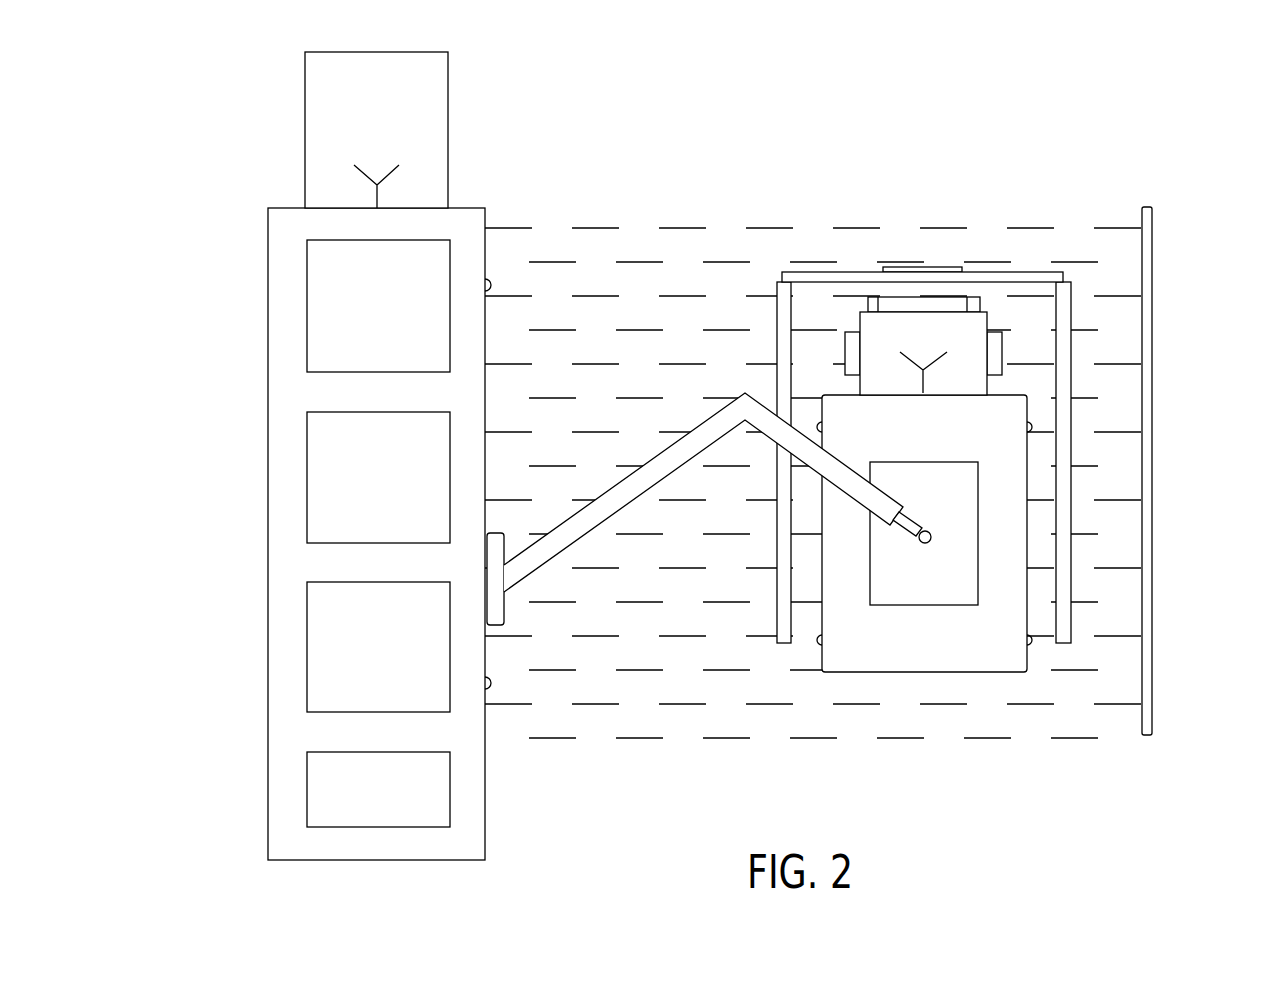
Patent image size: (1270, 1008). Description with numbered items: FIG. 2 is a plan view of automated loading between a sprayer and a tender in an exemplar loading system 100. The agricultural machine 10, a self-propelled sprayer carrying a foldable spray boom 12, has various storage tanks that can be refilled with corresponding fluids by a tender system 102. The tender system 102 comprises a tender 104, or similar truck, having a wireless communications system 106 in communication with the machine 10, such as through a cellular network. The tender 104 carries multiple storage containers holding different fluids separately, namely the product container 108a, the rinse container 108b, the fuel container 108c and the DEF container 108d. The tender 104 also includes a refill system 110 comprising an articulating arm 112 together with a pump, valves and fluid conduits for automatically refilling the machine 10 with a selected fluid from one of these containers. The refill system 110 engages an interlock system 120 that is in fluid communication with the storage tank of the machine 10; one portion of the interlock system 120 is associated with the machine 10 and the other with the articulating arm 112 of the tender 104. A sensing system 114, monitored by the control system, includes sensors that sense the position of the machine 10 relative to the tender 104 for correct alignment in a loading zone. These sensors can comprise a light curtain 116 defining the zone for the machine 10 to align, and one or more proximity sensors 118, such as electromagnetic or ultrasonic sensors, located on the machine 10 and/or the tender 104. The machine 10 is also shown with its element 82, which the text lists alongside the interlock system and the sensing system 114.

The loading system 100 is at (1122, 126).
The tender system 102 is at (262, 65).
The tender 104 is at (425, 88).
The wireless communications system 106 is at (345, 165).
The product container 108a is at (328, 305).
The rinse container 108b is at (328, 478).
The fuel container 108c is at (328, 650).
The DEF container 108d is at (328, 790).
The refill system 110 is at (528, 648).
The articulating arm 112 is at (625, 497).
The sensing system 114 is at (573, 275).
The light curtain 116 is at (1152, 262).
The proximity sensor 118 is at (492, 285).
The interlock system 120 is at (935, 547).
The agricultural machine 10 is at (862, 262).
The foldable spray boom 12 is at (778, 303).
The antenna of robotic device 82 is at (932, 337).